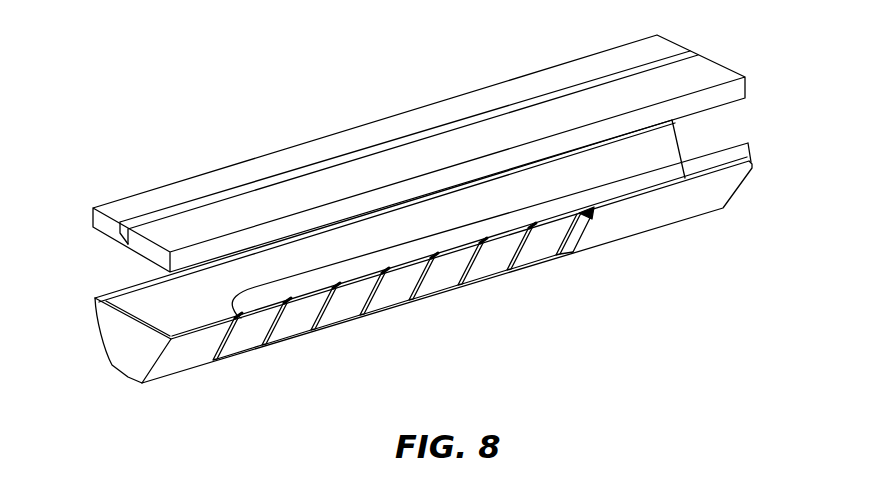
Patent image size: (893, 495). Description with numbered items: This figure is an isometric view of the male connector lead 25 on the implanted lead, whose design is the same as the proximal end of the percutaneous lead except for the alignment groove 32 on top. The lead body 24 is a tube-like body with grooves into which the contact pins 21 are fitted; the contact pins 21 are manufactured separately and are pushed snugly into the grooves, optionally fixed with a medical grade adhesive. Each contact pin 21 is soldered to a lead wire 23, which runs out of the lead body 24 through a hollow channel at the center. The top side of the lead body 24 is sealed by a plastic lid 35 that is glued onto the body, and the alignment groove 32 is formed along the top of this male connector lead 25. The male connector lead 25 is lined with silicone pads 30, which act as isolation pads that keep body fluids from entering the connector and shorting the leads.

The contact pins 21 is at (508, 275).
The lead wire 23 is at (400, 243).
The lead body 24 is at (100, 328).
The male connector lead 25 is at (409, 214).
The silicone pads 30 is at (386, 306).
The alignment groove 32 is at (330, 163).
The plastic lid 35 is at (147, 204).